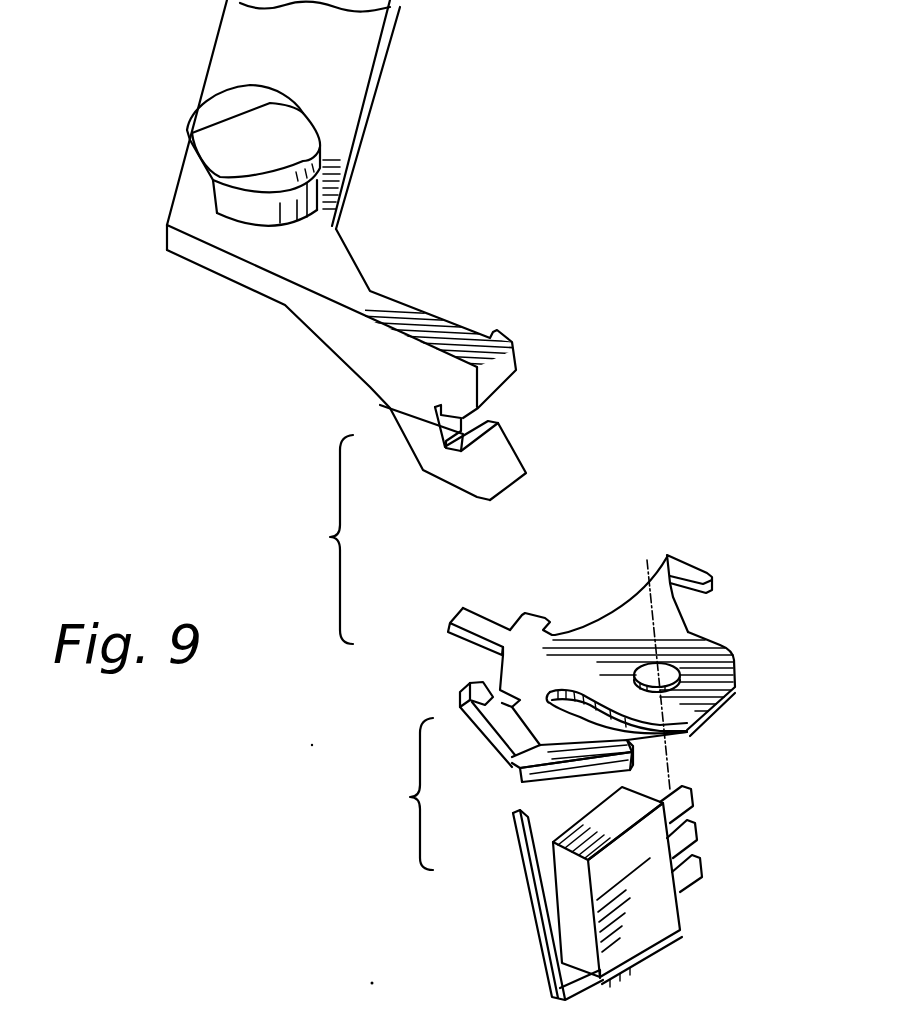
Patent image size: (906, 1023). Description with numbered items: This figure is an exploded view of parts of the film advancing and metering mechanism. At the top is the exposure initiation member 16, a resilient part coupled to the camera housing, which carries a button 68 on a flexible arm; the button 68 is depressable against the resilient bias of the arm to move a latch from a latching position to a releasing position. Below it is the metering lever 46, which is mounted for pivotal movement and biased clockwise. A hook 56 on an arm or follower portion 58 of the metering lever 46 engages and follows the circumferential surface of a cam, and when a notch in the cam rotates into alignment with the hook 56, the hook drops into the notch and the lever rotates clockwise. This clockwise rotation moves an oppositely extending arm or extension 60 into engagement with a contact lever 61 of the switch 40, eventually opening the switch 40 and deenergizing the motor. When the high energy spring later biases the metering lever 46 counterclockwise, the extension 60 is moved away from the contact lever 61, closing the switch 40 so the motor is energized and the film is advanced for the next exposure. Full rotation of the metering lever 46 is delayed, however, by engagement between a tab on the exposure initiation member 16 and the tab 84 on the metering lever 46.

The exposure initiation member 16 is at (290, 337).
The button 68 is at (289, 128).
The metering lever 46 is at (707, 688).
The arm or follower portion 58 is at (667, 557).
The hook 56 is at (712, 576).
The arm or extension 60 is at (453, 622).
The tab 84 is at (467, 692).
The switch 40 is at (660, 923).
The contact lever 61 is at (522, 842).